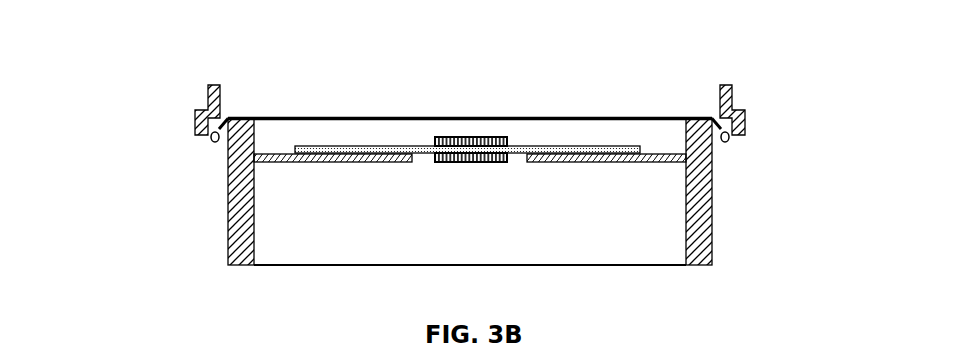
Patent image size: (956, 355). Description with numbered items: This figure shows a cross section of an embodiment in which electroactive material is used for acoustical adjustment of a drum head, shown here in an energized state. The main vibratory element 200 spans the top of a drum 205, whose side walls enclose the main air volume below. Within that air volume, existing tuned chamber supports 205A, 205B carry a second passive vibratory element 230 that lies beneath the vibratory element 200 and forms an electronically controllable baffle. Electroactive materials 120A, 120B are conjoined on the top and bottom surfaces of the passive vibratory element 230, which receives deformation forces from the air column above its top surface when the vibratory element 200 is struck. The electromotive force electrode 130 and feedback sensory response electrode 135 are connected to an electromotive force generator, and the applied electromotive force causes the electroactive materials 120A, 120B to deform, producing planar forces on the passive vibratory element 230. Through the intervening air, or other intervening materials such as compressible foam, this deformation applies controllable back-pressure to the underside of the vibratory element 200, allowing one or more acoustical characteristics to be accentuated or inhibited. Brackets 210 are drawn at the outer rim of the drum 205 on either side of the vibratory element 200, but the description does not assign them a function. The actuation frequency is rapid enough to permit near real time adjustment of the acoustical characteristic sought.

The vibratory element 200 is at (444, 113).
The drum 205 is at (700, 208).
The tuned chamber support 205A is at (279, 153).
The tuned chamber support 205B is at (655, 156).
The mounting brackets 210 is at (207, 110).
The second passive vibratory element 230 is at (380, 147).
The electroactive material 120A is at (505, 140).
The electroactive material 120B is at (504, 162).
The electromotive force electrode 130 is at (292, 198).
The feedback sensory response electrode 135 is at (476, 170).